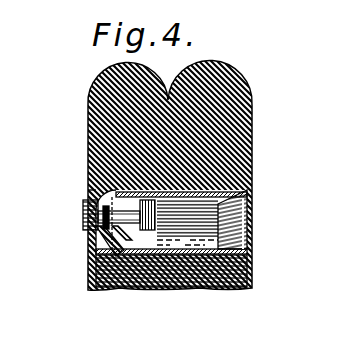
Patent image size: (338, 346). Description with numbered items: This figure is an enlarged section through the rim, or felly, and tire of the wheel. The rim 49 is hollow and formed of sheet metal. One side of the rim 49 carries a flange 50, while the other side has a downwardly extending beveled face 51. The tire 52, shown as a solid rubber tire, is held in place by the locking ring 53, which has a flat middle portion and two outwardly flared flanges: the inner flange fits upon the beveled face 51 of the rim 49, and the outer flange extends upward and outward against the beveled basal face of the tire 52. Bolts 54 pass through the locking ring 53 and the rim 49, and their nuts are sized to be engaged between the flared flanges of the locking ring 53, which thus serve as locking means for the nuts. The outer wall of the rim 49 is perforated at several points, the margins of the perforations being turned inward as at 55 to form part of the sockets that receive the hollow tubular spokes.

The rim 49 is at (222, 234).
The flange 50 is at (248, 190).
The beveled face 51 is at (112, 247).
The tire 52 is at (253, 132).
The locking ring 53 is at (92, 181).
The bolts 54 is at (90, 210).
The inwardly turned perforation margins 55 is at (142, 230).